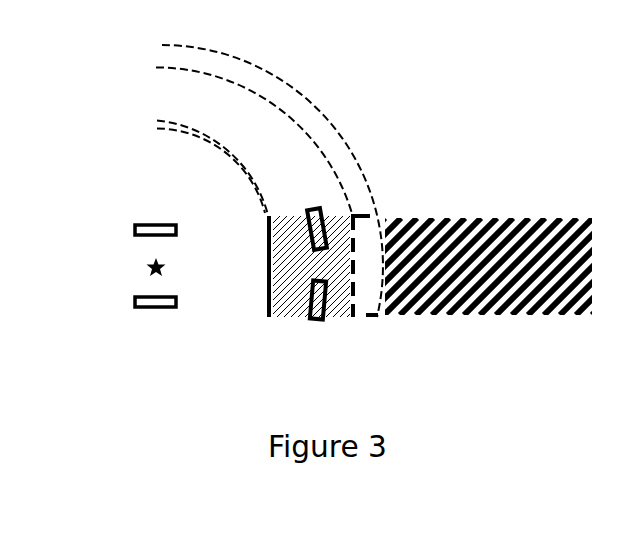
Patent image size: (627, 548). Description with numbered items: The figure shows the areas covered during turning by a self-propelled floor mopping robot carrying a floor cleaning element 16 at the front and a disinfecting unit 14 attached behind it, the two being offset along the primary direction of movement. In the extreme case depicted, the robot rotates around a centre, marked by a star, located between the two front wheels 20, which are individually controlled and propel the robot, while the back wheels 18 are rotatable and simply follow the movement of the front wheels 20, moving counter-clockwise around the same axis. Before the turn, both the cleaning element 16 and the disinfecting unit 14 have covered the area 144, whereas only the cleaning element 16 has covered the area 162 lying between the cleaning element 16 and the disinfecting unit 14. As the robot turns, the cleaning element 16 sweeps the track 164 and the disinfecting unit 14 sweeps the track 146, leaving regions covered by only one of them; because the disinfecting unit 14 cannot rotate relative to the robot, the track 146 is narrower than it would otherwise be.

The disinfecting unit 14 is at (367, 318).
The floor cleaning element 16 is at (262, 307).
The back wheels 18 is at (312, 322).
The front wheels 20 is at (153, 315).
The area covered by both cleaning element and disinfecting unit 144 is at (448, 215).
The track covered by disinfecting unit 146 is at (348, 147).
The area covered only by cleaning element 162 is at (339, 320).
The track covered by cleaning element 164 is at (232, 172).